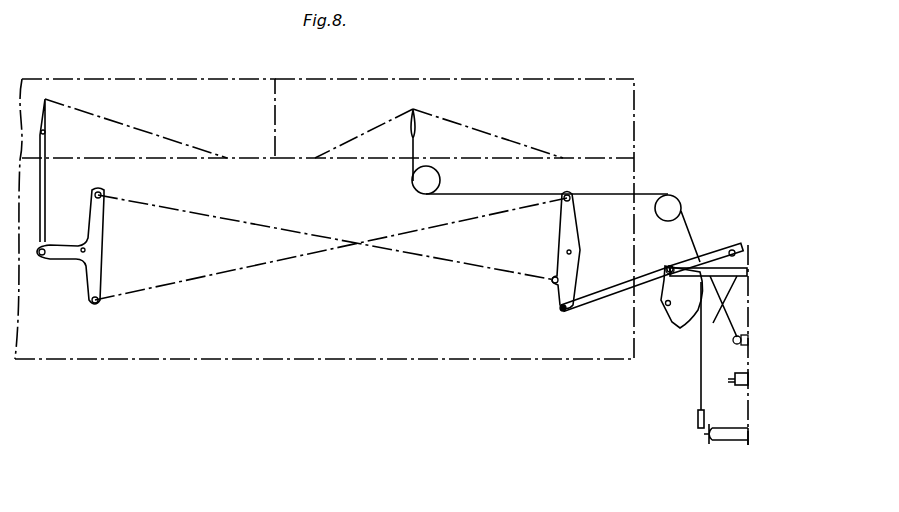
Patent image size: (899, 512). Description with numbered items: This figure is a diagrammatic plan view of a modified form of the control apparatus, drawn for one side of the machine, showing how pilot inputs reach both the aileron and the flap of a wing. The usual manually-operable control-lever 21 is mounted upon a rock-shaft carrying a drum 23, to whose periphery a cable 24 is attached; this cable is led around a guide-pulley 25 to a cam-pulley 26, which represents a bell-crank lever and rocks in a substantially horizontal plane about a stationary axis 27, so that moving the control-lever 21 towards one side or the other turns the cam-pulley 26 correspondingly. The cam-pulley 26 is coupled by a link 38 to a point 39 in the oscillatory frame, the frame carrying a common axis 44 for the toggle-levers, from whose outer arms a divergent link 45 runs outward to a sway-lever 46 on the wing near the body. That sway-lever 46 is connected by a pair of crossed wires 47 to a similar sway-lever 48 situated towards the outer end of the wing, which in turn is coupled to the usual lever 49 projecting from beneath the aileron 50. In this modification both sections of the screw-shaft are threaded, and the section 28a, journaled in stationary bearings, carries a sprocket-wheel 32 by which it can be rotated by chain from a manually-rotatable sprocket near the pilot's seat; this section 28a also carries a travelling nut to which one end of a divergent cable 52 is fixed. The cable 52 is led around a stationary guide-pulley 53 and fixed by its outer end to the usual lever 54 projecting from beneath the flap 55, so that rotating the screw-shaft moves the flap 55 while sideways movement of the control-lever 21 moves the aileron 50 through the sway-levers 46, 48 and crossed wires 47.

The aileron 50 is at (218, 90).
The flap 55 is at (560, 90).
The lever 49 is at (44, 133).
The lever 54 is at (415, 137).
The stationary guide-pulley 53 is at (413, 184).
The divergent cable 52 is at (480, 194).
The sway-lever 48 is at (87, 231).
The crossed wires 47 is at (208, 276).
The sway-lever 46 is at (565, 228).
The divergent link 45 is at (612, 292).
The link 38 is at (720, 270).
The common axis 44 is at (748, 250).
The cam-pulley 26 is at (676, 323).
The stationary axis 27 is at (666, 305).
The point in frame 39 is at (726, 305).
The screw-shaft section 28a is at (741, 346).
The cable 24 is at (701, 396).
The guide-pulley 25 is at (698, 419).
The sprocket-wheel 32 is at (735, 382).
The drum 23 is at (718, 428).
The manually-operable control-lever 21 is at (735, 441).